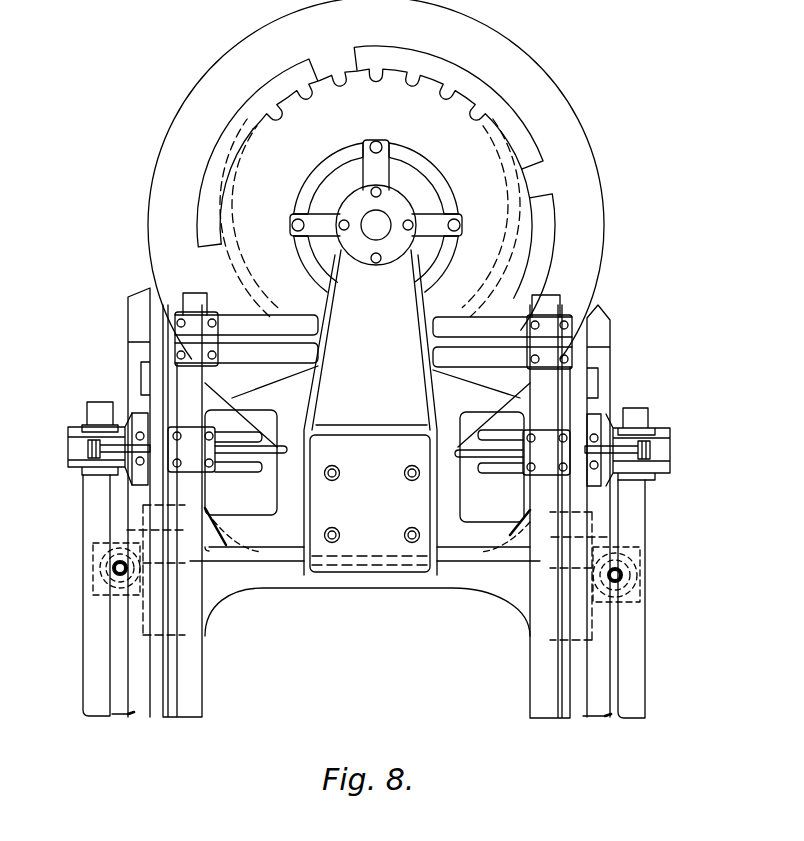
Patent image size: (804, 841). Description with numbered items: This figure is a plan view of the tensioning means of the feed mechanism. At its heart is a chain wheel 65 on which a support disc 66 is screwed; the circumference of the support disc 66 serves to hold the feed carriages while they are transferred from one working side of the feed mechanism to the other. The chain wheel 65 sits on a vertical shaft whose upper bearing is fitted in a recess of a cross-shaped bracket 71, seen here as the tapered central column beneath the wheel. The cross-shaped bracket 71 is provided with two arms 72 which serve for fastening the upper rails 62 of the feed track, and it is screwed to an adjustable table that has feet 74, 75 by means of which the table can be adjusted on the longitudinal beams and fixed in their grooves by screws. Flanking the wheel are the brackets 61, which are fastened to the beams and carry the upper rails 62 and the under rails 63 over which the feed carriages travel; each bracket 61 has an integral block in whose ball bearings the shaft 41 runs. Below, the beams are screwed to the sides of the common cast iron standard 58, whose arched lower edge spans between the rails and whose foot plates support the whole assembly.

The shaft 41 is at (97, 675).
The cast iron standard 58 is at (243, 583).
The bracket 61 is at (243, 462).
The upper rail 62 is at (197, 681).
The under rail 63 is at (155, 705).
The chain wheel 65 is at (470, 105).
The support disc 66 is at (500, 50).
The cross-shaped bracket 71 is at (400, 290).
The arm 72 is at (512, 323).
The foot 74 is at (258, 535).
The foot 75 is at (212, 394).